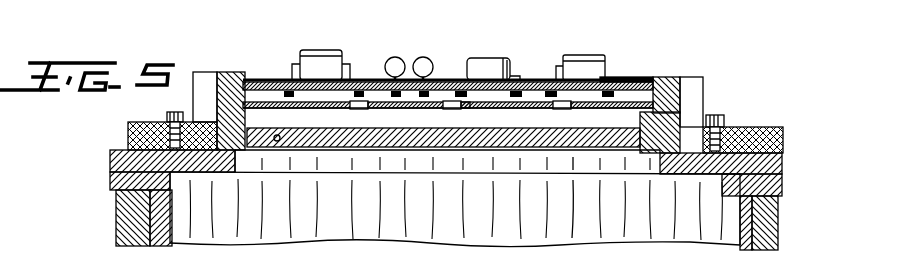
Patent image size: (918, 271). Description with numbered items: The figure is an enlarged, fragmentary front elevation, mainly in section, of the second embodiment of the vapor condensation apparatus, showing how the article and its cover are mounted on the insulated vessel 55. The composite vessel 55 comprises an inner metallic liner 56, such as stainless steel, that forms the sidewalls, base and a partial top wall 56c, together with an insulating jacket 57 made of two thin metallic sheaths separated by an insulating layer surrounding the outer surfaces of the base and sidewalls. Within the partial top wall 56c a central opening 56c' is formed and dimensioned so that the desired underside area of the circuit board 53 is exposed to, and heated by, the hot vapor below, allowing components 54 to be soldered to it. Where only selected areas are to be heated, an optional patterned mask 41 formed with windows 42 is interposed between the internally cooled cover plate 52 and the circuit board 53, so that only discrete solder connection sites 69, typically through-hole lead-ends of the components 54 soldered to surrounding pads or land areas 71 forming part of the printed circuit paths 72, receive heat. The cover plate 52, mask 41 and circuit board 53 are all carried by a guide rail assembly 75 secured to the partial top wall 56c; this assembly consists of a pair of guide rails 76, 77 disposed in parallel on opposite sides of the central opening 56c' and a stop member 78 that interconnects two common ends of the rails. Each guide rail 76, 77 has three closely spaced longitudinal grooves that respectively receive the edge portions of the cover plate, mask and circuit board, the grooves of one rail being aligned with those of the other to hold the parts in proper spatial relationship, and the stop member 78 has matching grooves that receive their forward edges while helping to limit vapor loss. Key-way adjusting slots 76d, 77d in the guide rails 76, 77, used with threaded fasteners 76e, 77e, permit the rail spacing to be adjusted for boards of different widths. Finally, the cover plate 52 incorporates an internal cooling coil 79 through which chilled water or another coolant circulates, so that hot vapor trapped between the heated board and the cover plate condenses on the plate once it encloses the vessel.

The patterned mask 41 is at (483, 113).
The windows 42 is at (552, 108).
The retractable cover plate 52 is at (373, 146).
The circuit board 53 is at (443, 80).
The components 54 is at (421, 58).
The insulated vessel 55 is at (782, 222).
The inner metallic liner 56 is at (590, 228).
The partial top wall 56c is at (477, 173).
The central opening 56c' is at (540, 197).
The insulating jacket 57 is at (118, 215).
The solder connection sites 69 is at (440, 108).
The pads or land areas 71 is at (586, 108).
The printed circuit paths 72 is at (355, 108).
The guide rail assembly 75 is at (704, 73).
The guide rail 76 is at (230, 72).
The key-way adjusting slots 76d is at (128, 130).
The threaded fasteners 76e is at (168, 115).
The guide rail 77 is at (672, 77).
The key-way adjusting slots 77d is at (742, 127).
The threaded fasteners 77e is at (713, 115).
The stop member 78 is at (535, 78).
The cooling coil 79 is at (290, 150).